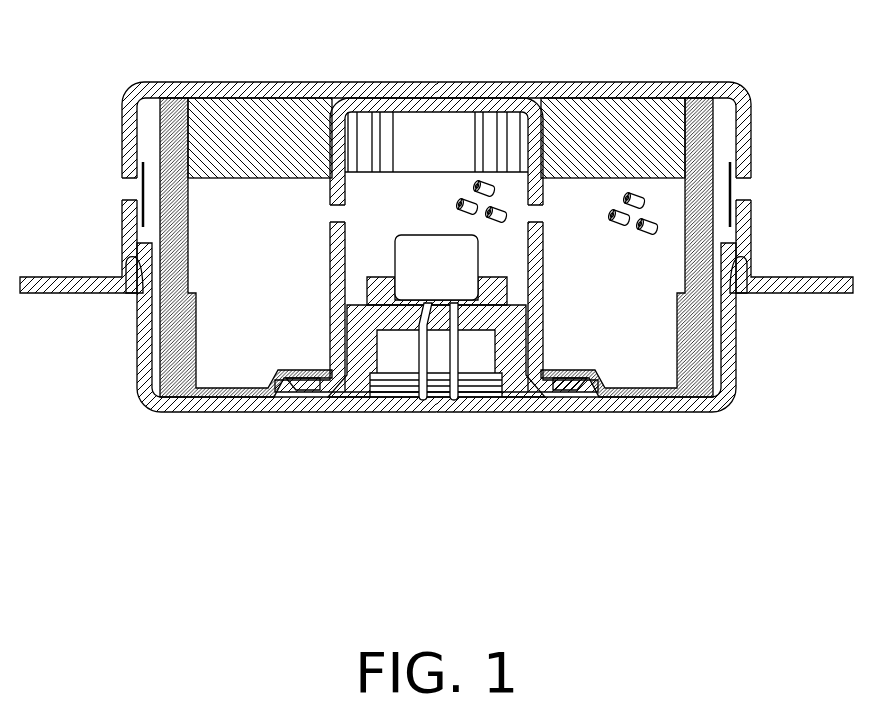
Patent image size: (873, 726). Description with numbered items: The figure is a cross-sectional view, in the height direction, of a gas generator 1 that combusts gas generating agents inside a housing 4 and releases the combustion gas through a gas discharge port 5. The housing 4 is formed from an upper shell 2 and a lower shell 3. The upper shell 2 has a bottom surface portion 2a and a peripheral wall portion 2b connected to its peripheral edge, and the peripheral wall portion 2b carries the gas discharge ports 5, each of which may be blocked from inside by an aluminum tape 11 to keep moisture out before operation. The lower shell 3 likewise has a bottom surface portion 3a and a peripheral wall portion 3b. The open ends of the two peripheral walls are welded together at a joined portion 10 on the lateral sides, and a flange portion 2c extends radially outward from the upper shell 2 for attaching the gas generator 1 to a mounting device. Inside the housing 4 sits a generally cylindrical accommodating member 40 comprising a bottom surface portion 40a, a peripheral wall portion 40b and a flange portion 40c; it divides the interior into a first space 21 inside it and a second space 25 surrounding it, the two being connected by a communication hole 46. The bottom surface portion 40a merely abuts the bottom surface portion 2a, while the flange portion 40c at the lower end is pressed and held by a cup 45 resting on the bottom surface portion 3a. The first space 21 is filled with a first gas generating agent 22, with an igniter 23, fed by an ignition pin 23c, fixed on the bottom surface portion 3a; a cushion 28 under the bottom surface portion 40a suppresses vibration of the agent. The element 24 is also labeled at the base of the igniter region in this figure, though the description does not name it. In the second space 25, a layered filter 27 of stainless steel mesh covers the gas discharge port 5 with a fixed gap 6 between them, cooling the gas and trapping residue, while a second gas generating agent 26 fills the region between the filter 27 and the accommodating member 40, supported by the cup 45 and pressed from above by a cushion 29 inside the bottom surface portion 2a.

The gas generator 1 is at (436, 300).
The upper shell 2 is at (436, 181).
The bottom surface portion 2a is at (286, 84).
The peripheral wall portion 2b is at (752, 145).
The flange portion 2c is at (832, 277).
The lower shell 3 is at (432, 361).
The bottom surface portion 3a is at (657, 412).
The peripheral wall portion 3b is at (737, 368).
The housing 4 is at (436, 250).
The gas discharge port 5 is at (124, 188).
The gap 6 is at (147, 130).
The joined portion 10 is at (132, 293).
The aluminum tape 11 is at (142, 150).
The first space 21 is at (392, 221).
The first gas generating agent 22 is at (489, 183).
The igniter 23 is at (437, 349).
The ignition pin 23c is at (420, 400).
The base 24 is at (355, 412).
The second space 25 is at (240, 270).
The second gas generating agent 26 is at (637, 196).
The filter 27 is at (175, 393).
The cushion 28 is at (459, 122).
The cushion 29 is at (578, 115).
The accommodating member 40 is at (437, 250).
The bottom surface portion 40a is at (387, 106).
The peripheral wall portion 40b is at (541, 300).
The flange portion 40c is at (556, 411).
The cup 45 is at (270, 372).
The communication hole 46 is at (329, 213).